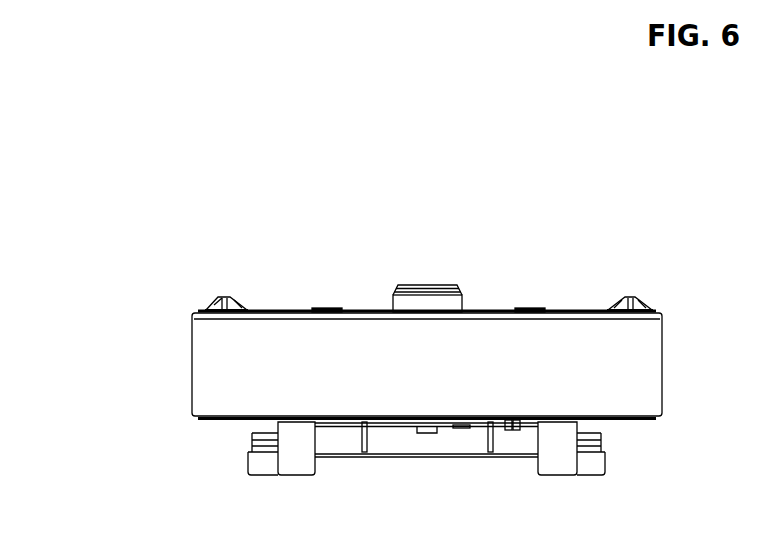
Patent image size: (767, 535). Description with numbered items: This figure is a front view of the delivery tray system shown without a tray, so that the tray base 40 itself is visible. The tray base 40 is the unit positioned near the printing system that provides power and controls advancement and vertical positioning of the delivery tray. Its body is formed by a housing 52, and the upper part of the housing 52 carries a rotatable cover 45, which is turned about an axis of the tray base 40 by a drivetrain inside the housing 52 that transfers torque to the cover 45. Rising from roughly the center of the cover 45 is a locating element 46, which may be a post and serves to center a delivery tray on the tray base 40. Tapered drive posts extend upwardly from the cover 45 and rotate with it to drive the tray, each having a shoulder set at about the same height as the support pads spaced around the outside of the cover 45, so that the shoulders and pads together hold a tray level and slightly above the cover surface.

The tray base 40 is at (383, 337).
The cover 45 is at (366, 308).
The locating element 46 is at (432, 297).
The housing 52 is at (250, 358).